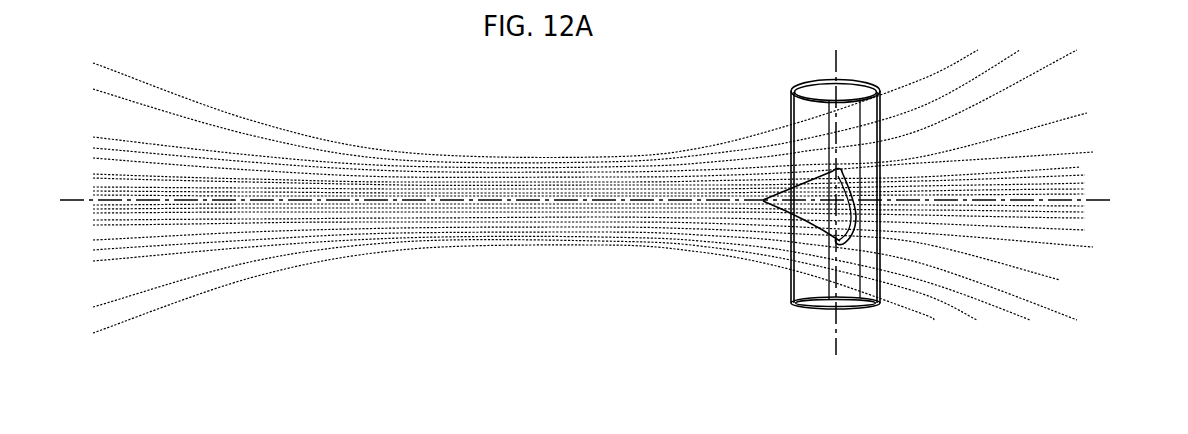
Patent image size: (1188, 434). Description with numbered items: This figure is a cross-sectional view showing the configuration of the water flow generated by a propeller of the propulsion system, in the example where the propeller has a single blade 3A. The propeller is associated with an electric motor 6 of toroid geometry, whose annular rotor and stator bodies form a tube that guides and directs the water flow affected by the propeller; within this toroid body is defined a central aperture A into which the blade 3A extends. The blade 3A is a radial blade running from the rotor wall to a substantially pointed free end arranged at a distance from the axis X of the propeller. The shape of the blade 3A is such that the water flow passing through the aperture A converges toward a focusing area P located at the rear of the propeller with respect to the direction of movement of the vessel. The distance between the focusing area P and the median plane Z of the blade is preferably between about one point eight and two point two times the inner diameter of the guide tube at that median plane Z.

The electric motor 6 is at (889, 85).
The blade 3A is at (815, 228).
The focusing area P is at (388, 172).
The axis of the propeller X is at (586, 207).
The median plane of the blade Z is at (834, 62).
The central aperture A is at (848, 293).